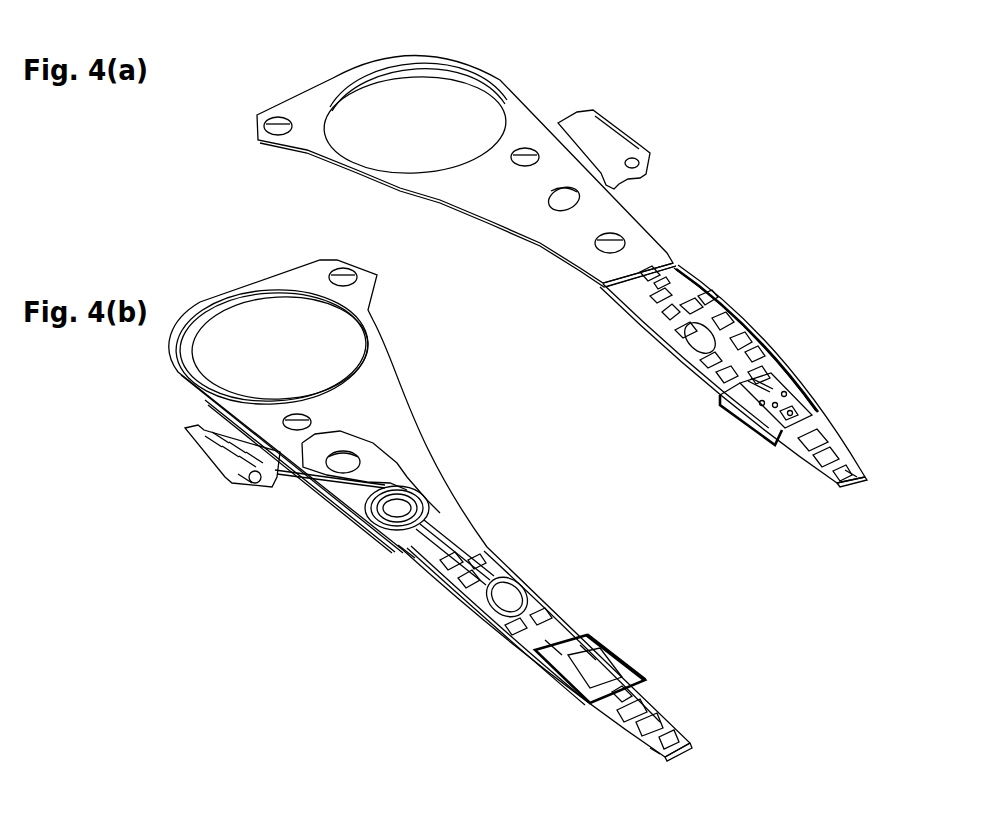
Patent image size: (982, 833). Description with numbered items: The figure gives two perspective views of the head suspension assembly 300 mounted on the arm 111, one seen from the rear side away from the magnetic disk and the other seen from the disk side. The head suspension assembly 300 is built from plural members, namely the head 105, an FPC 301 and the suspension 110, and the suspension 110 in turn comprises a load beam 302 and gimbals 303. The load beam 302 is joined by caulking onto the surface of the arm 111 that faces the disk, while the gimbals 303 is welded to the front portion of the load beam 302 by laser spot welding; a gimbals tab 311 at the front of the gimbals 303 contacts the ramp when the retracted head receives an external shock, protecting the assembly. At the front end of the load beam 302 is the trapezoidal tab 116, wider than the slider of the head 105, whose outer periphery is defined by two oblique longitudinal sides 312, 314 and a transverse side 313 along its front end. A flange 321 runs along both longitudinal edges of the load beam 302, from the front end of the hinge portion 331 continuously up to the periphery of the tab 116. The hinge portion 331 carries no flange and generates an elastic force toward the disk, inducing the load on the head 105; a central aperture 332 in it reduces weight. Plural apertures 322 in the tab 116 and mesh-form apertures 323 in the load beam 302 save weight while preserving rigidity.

In FIG. 4B, the head 105 is at (560, 690).
In FIG. 4A, the suspension 110 is at (755, 321).
In FIG. 4B, the suspension 110 is at (606, 613).
In FIG. 4A, the arm 111 is at (490, 78).
In FIG. 4A, the tab 116 is at (840, 487).
In FIG. 4B, the tab 116 is at (620, 727).
In FIG. 4A, the head suspension assembly 300 is at (802, 355).
In FIG. 4B, the head suspension assembly 300 is at (555, 576).
In FIG. 4A, the FPC 301 is at (630, 178).
In FIG. 4B, the FPC 301 is at (288, 483).
In FIG. 4A, the load beam 302 is at (658, 342).
In FIG. 4B, the load beam 302 is at (519, 562).
In FIG. 4A, the gimbals 303 is at (770, 443).
In FIG. 4B, the gimbals 303 is at (522, 655).
In FIG. 4B, the gimbals tab 311 is at (631, 697).
In FIG. 4A, the side 312 is at (818, 475).
In FIG. 4B, the side 312 is at (688, 733).
In FIG. 4A, the side 313 is at (852, 482).
In FIG. 4B, the side 313 is at (681, 752).
In FIG. 4A, the side 314 is at (847, 468).
In FIG. 4B, the side 314 is at (650, 750).
In FIG. 4A, the flange 321 is at (693, 280).
In FIG. 4B, the flange 321 is at (438, 573).
In FIG. 4A, the apertures 322 is at (833, 443).
In FIG. 4B, the apertures 322 is at (658, 717).
In FIG. 4A, the apertures 323 is at (707, 373).
In FIG. 4A, the hinge portion 331 is at (627, 290).
In FIG. 4B, the hinge portion 331 is at (410, 547).
In FIG. 4A, the aperture 332 is at (650, 270).